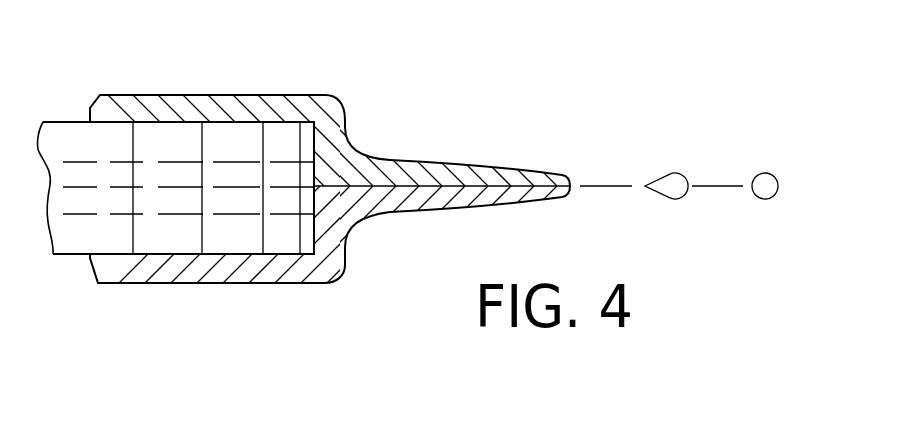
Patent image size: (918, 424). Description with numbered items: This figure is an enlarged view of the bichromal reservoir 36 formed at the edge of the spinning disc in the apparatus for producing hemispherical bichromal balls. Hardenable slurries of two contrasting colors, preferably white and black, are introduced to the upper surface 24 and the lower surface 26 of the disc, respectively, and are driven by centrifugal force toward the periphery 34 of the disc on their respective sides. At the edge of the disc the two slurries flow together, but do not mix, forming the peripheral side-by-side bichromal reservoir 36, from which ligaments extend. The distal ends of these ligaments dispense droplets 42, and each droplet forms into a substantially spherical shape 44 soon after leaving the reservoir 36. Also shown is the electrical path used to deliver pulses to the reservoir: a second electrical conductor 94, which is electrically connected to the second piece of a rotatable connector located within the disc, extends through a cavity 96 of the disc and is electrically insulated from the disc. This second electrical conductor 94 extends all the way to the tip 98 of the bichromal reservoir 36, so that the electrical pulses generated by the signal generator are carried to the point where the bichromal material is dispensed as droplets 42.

The upper surface 24 is at (140, 122).
The second electrical conductor 94 is at (187, 187).
The bichromal reservoir 36 is at (348, 160).
The tip 98 is at (562, 172).
The droplets 42 is at (667, 170).
The substantially spherical shape 44 is at (764, 172).
The cavity 96 is at (85, 214).
The lower surface 26 is at (173, 255).
The periphery 34 is at (333, 243).